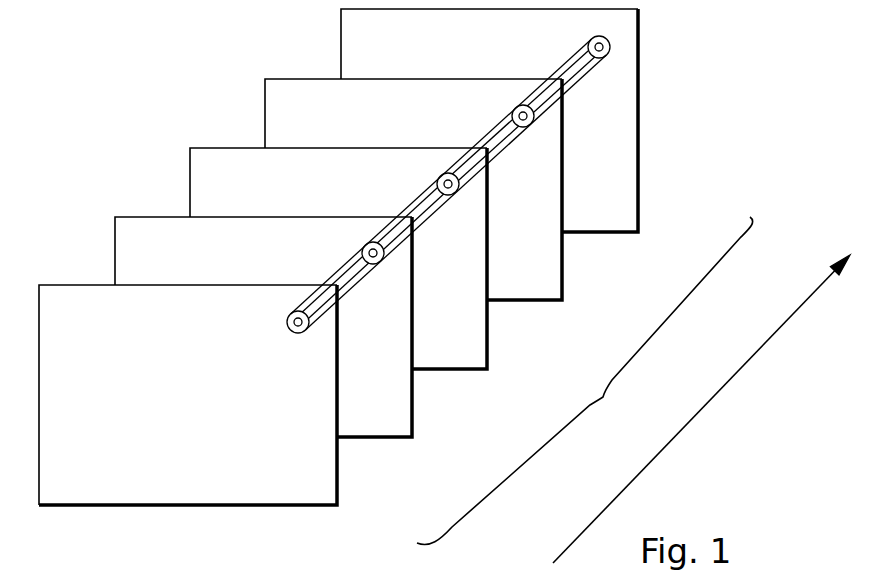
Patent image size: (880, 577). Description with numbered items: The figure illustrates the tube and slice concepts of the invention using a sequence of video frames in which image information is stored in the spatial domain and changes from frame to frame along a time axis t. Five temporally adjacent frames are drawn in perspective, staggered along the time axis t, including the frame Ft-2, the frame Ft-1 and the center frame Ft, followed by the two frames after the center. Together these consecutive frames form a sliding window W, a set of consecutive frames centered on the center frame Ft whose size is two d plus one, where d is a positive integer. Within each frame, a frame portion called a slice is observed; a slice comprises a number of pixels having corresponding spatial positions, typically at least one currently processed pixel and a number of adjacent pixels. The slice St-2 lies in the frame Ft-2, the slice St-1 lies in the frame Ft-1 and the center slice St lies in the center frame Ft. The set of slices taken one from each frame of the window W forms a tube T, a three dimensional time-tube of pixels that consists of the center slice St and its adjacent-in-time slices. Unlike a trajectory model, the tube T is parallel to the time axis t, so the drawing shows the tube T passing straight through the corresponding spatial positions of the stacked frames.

The video frame at time t-2 Ft-2 is at (207, 408).
The video frame at time t-1 Ft-1 is at (283, 342).
The center video frame at time t Ft is at (351, 272).
The slice at time t-2 St-2 is at (260, 326).
The slice at time t-1 St-1 is at (334, 256).
The center slice at time t St is at (408, 186).
The tube T is at (617, 78).
The window W is at (585, 381).
The time axis t is at (701, 409).